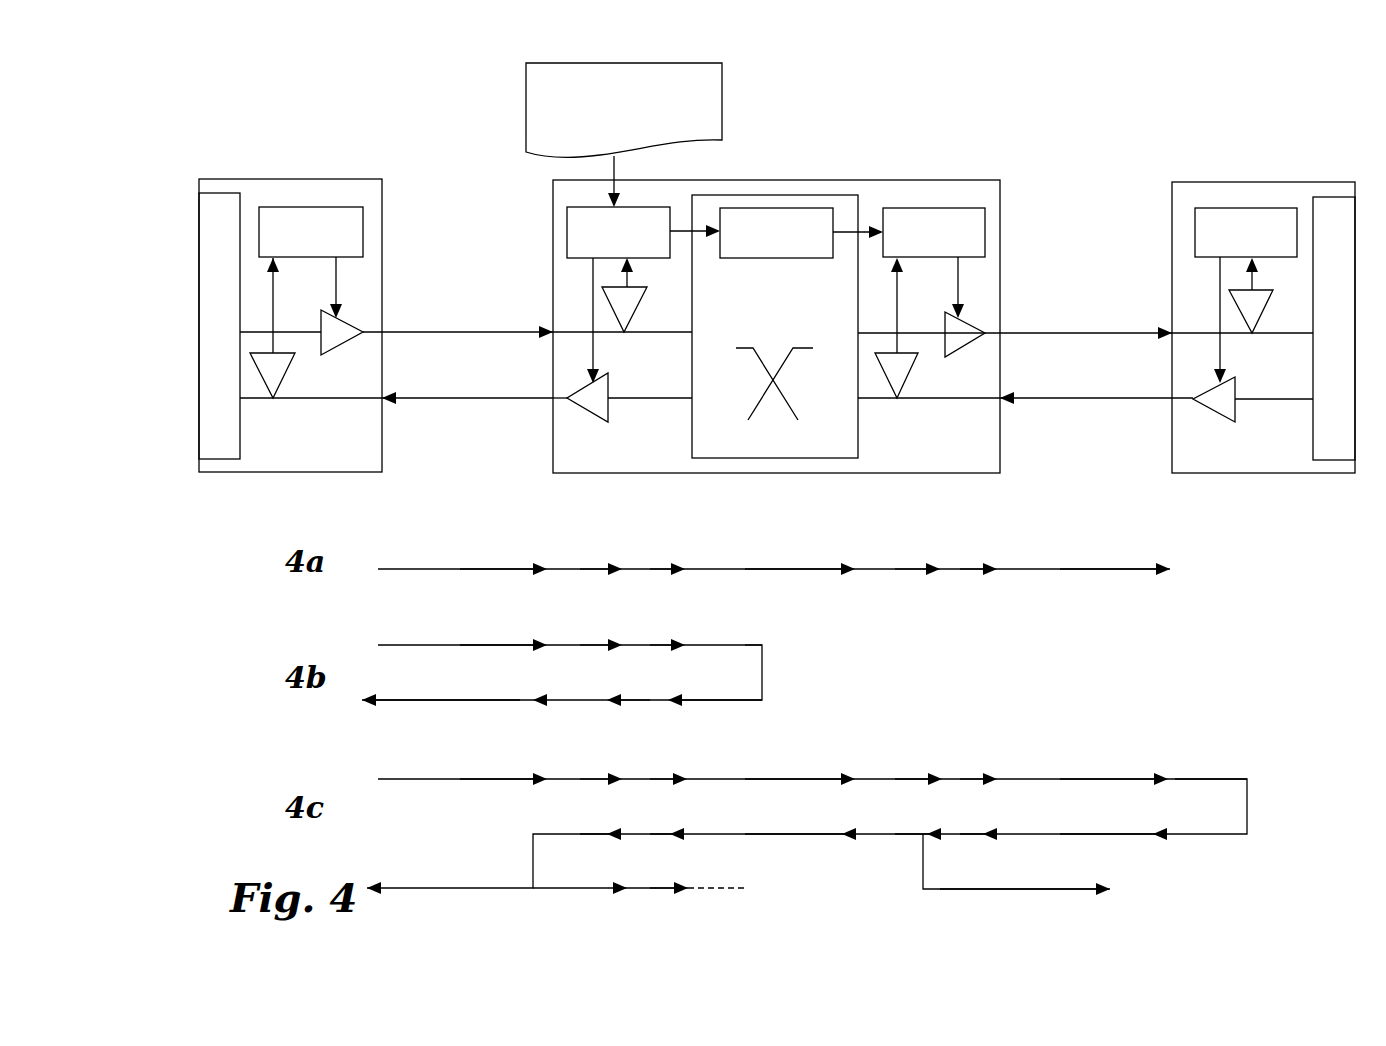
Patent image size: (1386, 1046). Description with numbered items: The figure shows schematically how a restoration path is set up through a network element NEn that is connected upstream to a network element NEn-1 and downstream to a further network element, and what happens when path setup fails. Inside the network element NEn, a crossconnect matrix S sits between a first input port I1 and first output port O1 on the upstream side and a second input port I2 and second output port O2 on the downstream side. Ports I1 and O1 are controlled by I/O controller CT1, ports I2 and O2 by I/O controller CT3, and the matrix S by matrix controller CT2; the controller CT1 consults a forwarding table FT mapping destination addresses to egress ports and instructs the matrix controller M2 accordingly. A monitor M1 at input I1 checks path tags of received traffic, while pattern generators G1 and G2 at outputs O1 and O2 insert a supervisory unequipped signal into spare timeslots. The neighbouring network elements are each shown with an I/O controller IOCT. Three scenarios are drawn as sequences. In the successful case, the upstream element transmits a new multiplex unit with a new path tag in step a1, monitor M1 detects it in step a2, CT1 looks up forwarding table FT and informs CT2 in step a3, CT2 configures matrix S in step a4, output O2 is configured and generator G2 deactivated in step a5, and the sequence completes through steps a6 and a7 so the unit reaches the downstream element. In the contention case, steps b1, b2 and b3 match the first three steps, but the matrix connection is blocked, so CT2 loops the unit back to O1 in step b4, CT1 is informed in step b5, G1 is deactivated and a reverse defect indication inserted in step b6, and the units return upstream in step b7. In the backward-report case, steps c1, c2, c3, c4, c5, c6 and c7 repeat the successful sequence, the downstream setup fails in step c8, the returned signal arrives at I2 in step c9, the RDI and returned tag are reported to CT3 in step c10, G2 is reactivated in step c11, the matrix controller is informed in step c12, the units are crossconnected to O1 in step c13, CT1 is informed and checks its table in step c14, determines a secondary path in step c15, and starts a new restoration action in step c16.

In FIG. 4, the forwarding table FT is at (655, 110).
In FIG. 4, the network element NEn-1 is at (298, 305).
In FIG. 4, the network element NEn is at (776, 306).
In FIG. 4, the input/output control terminal IOCT is at (778, 232).
In FIG. 4, the I/O controller CT1 is at (618, 232).
In FIG. 4, the matrix controller CT2 is at (776, 233).
In FIG. 4, the I/O controller CT3 is at (934, 232).
In FIG. 4, the crossconnect matrix S is at (775, 356).
In FIG. 4, the first input port I1 is at (572, 302).
In FIG. 4, the first output port O1 is at (569, 379).
In FIG. 4, the monitor M1 is at (639, 312).
In FIG. 4, the pattern generator G1 is at (604, 412).
In FIG. 4, the second input port I2 is at (977, 376).
In FIG. 4, the second output port O2 is at (974, 306).
In FIG. 4, the matrix controller M2 is at (915, 347).
In FIG. 4, the pattern generator G2 is at (997, 325).
In FIG. 4a, the step a1 is at (488, 551).
In FIG. 4a, the step a2 is at (594, 551).
In FIG. 4a, the step a3 is at (667, 551).
In FIG. 4a, the step a4 is at (787, 551).
In FIG. 4a, the step a5 is at (912, 551).
In FIG. 4a, the step a6 is at (979, 551).
In FIG. 4a, the step a7 is at (1102, 551).
In FIG. 4b, the step b1 is at (485, 627).
In FIG. 4b, the step b2 is at (595, 627).
In FIG. 4b, the step b3 is at (668, 627).
In FIG. 4b, the step b4 is at (758, 627).
In FIG. 4b, the step b5 is at (702, 682).
In FIG. 4b, the step b6 is at (610, 682).
In FIG. 4b, the step b7 is at (448, 682).
In FIG. 4c, the step c1 is at (485, 761).
In FIG. 4c, the step c2 is at (594, 761).
In FIG. 4c, the step c3 is at (667, 761).
In FIG. 4c, the step c4 is at (786, 761).
In FIG. 4c, the step c5 is at (911, 761).
In FIG. 4c, the step c6 is at (977, 761).
In FIG. 4c, the step c7 is at (1100, 761).
In FIG. 4c, the step c8 is at (1213, 761).
In FIG. 4c, the step c9 is at (1107, 816).
In FIG. 4c, the step c10 is at (983, 816).
In FIG. 4c, the step c11 is at (1018, 871).
In FIG. 4c, the step c12 is at (917, 816).
In FIG. 4c, the step c13 is at (794, 816).
In FIG. 4c, the step c14 is at (673, 816).
In FIG. 4c, the step c15 is at (600, 816).
In FIG. 4c, the step c16 is at (673, 870).